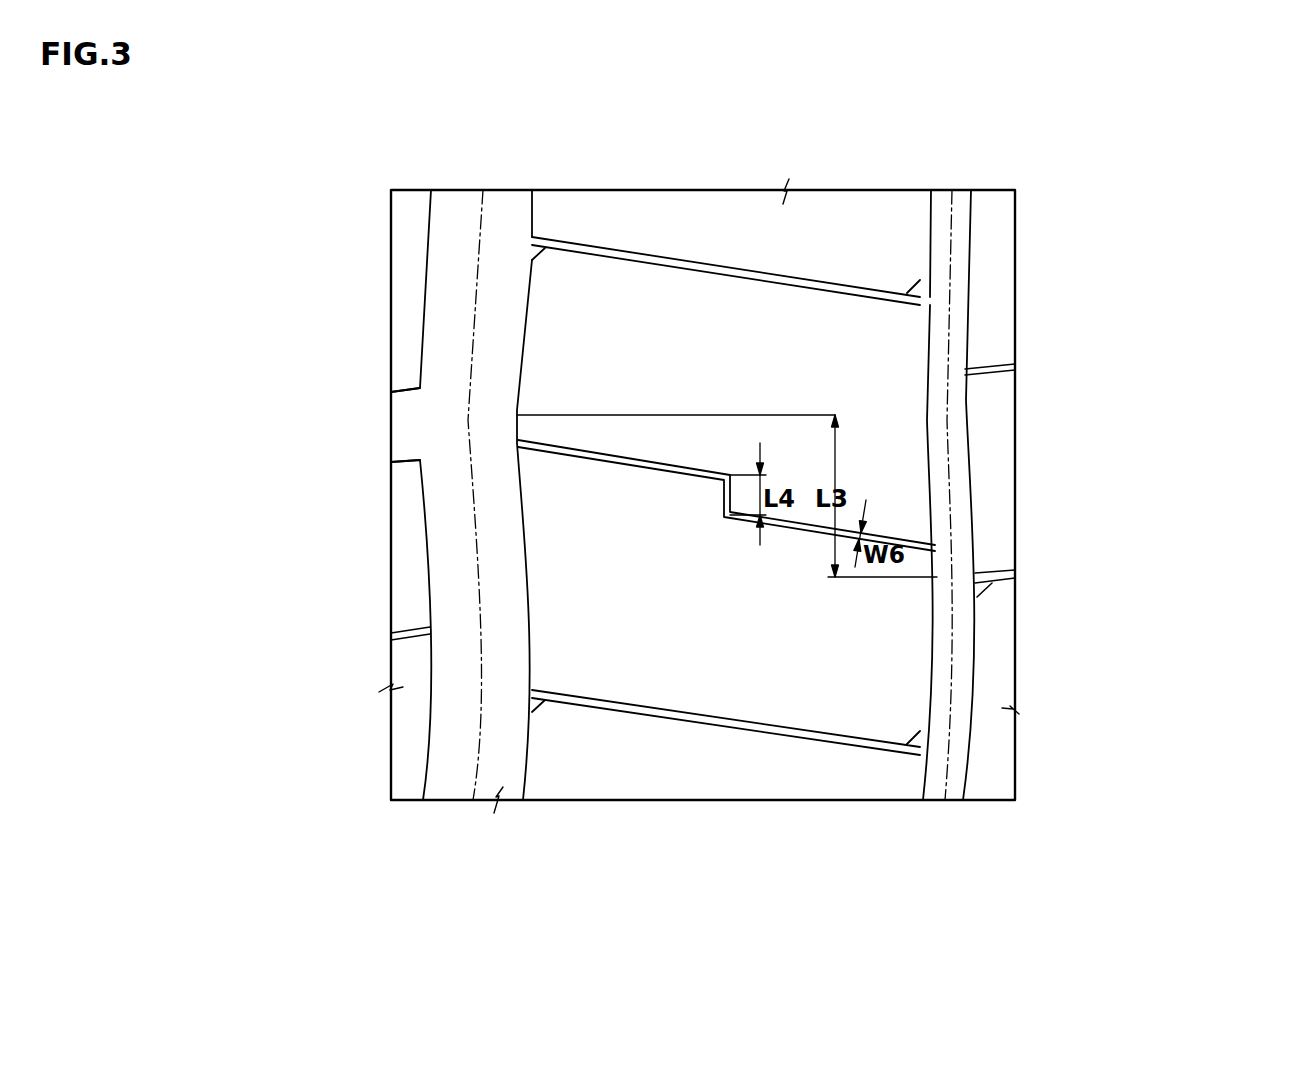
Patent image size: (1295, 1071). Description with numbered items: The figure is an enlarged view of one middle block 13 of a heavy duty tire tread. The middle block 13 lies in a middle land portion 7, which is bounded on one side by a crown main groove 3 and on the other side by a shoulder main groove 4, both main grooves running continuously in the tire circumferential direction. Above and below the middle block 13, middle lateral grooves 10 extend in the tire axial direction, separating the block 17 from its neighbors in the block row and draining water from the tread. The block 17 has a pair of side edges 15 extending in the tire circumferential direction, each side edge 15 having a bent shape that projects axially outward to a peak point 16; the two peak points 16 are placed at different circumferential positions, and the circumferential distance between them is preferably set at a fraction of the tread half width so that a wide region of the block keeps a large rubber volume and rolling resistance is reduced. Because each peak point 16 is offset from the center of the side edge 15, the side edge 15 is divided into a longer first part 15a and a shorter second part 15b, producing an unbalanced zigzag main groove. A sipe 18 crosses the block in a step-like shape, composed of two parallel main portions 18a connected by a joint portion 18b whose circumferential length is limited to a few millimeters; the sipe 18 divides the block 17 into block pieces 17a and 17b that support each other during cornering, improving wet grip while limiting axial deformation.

The crown main groove 3 is at (958, 228).
The shoulder main groove 4 is at (463, 228).
The middle land portion 7 is at (722, 228).
The middle lateral groove 10 is at (596, 246).
The middle block 13 is at (877, 363).
The side edge 15 is at (666, 464).
The first part 15a is at (522, 500).
The second part 15b is at (518, 357).
The peak point 16 is at (706, 499).
The block 17 is at (1081, 558).
The divided block piece 17a is at (890, 500).
The divided block piece 17b is at (872, 622).
The sipe 18 is at (726, 679).
The main portion 18a is at (610, 462).
The joint portion 18b is at (722, 492).